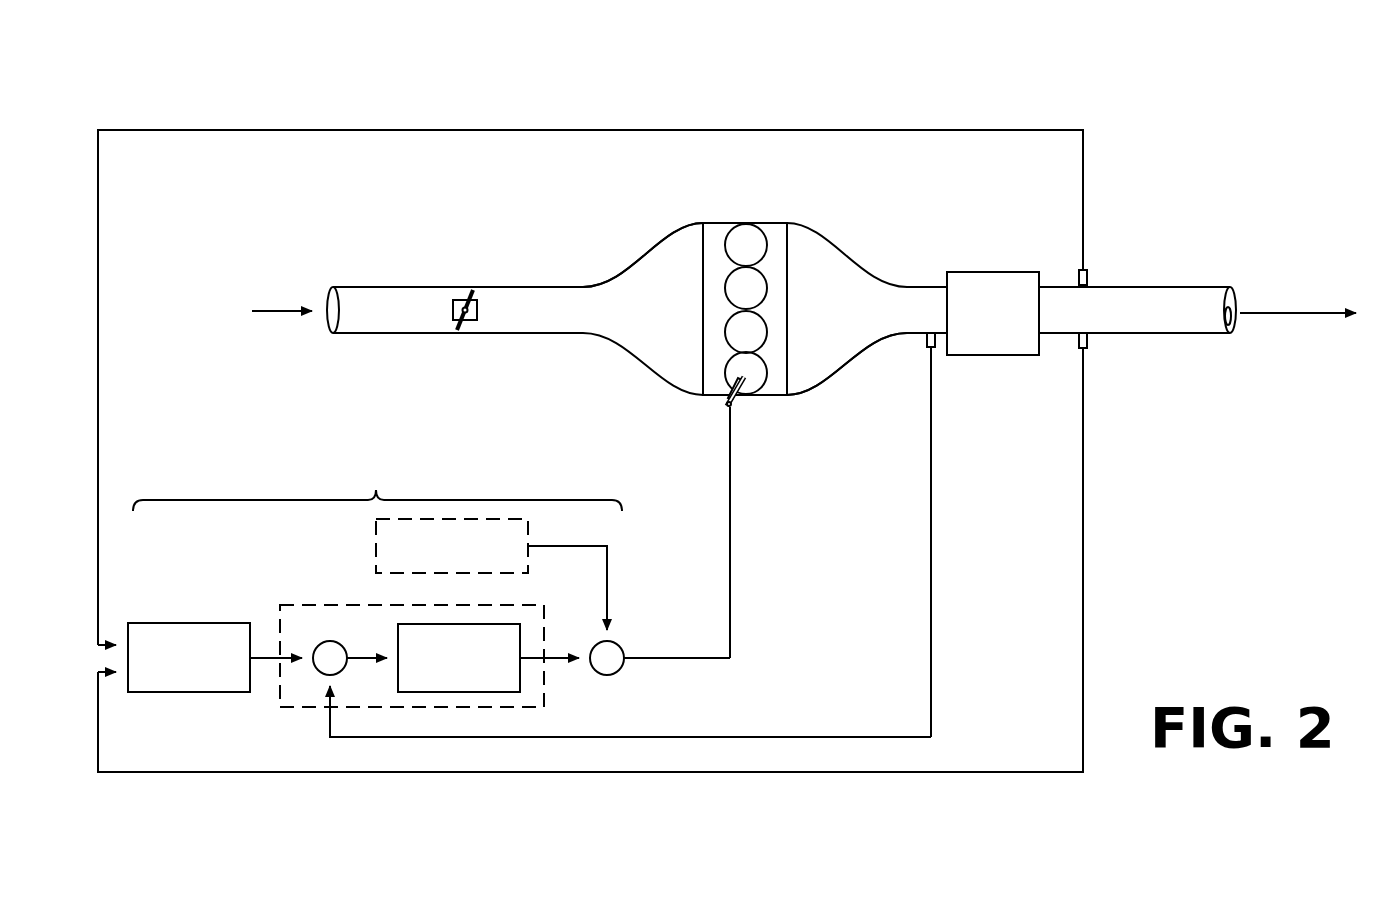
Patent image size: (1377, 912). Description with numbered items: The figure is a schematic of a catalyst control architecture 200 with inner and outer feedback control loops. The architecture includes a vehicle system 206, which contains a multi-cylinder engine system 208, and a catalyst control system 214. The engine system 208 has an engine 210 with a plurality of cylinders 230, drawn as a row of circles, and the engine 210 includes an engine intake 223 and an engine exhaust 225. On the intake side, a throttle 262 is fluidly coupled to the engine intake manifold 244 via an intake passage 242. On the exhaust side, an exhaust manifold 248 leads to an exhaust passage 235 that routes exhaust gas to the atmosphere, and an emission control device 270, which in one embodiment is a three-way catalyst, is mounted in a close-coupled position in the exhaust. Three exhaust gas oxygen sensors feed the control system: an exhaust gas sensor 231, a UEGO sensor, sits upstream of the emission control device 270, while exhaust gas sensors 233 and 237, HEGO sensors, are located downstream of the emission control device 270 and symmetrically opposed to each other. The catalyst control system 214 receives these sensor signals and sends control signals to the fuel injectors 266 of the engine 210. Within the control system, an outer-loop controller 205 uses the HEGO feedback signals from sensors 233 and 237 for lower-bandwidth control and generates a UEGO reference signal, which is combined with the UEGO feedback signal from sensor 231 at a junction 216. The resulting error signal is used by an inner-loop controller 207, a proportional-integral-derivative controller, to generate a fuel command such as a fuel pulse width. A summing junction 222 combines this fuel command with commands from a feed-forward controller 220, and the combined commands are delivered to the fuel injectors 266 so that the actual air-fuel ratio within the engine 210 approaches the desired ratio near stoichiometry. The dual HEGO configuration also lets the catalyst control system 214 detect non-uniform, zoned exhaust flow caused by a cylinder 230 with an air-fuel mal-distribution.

The catalyst control architecture 200 is at (118, 88).
The vehicle system 206 is at (270, 212).
The intake passage 242 is at (556, 334).
The throttle 262 is at (486, 309).
The multi-cylinder engine system 208 is at (763, 272).
The engine intake 223 is at (637, 242).
The engine exhaust 225 is at (870, 243).
The engine intake manifold 244 is at (643, 273).
The exhaust manifold 248 is at (847, 347).
The engine 210 is at (789, 293).
The cylinders 230 is at (745, 226).
The fuel injectors 266 is at (738, 411).
The exhaust gas sensor 231 is at (928, 342).
The emission control device 270 is at (978, 272).
The exhaust passage 235 is at (1185, 287).
The exhaust gas sensor 233 is at (1078, 280).
The exhaust gas sensor 237 is at (1078, 340).
The catalyst control system 214 is at (377, 575).
The outer-loop controller 205 is at (215, 657).
The junction 216 is at (335, 641).
The inner-loop controller 207 is at (488, 658).
The feed-forward controller 220 is at (491, 574).
The summing junction 222 is at (611, 673).